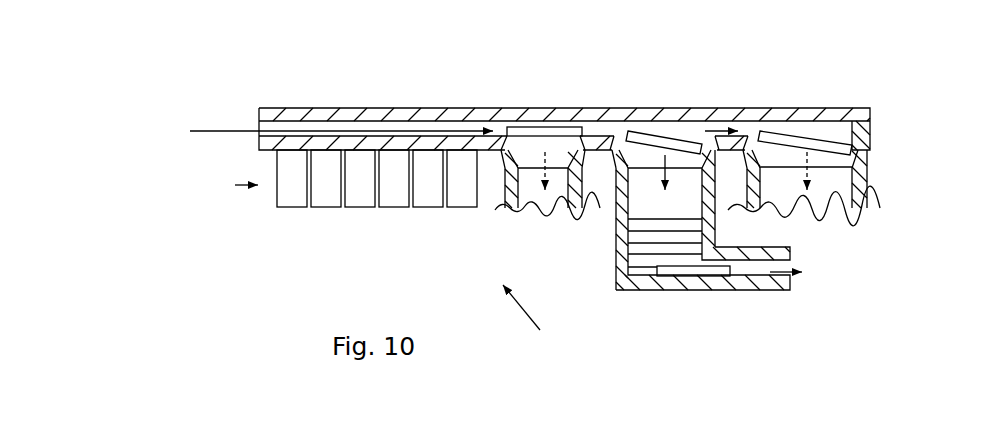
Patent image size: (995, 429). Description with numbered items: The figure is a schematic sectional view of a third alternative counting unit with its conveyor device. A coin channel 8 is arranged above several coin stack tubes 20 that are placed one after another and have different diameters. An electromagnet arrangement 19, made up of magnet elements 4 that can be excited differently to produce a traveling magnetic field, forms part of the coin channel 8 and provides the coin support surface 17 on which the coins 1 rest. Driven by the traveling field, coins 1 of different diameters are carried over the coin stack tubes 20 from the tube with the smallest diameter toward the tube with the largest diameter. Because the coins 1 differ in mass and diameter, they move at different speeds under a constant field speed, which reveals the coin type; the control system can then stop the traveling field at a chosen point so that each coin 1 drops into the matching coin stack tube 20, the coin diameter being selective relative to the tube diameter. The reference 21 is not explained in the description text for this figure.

The coin 1 is at (535, 130).
The magnet element 4 is at (298, 187).
The coin channel 8 is at (481, 107).
The coin support surface 17 is at (342, 128).
The electromagnet arrangement 19 is at (226, 185).
The coin stack tube 20 is at (545, 215).
The flow direction 21 is at (532, 315).